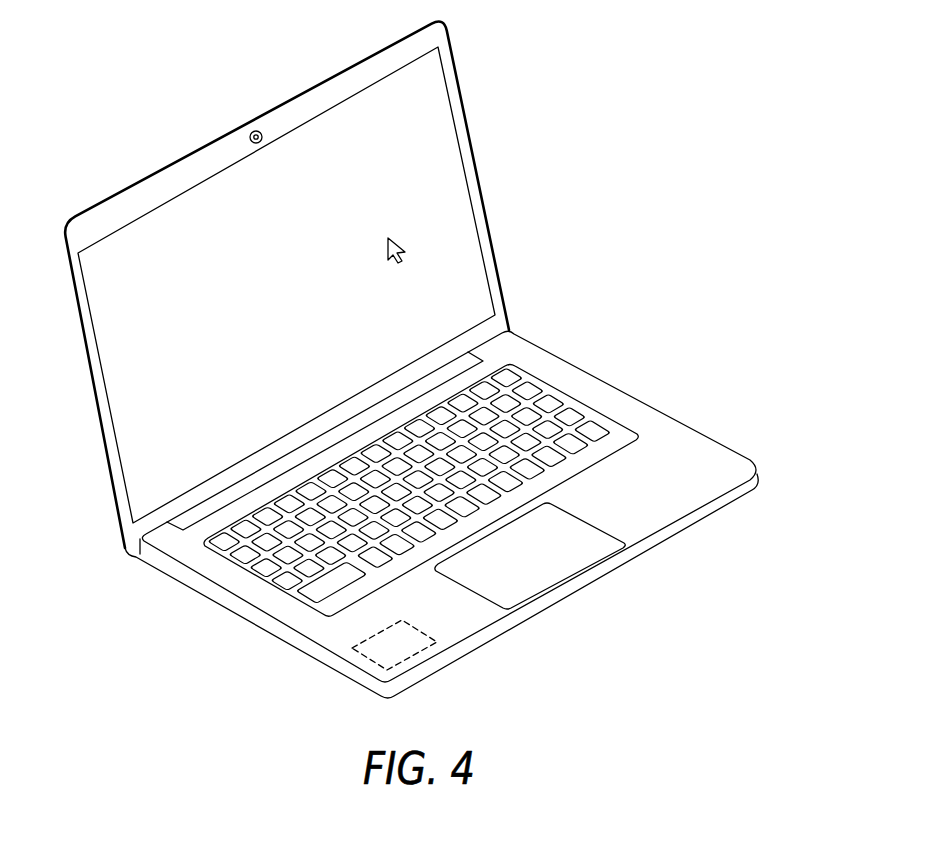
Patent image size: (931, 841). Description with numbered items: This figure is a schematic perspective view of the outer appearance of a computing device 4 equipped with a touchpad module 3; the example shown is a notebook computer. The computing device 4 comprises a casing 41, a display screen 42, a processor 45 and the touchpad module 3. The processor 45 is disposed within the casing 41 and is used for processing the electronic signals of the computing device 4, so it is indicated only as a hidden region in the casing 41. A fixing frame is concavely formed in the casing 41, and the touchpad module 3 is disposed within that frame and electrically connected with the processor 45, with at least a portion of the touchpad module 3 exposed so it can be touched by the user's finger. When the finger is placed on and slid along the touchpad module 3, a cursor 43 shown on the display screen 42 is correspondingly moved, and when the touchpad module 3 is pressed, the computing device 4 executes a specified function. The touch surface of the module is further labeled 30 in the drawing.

The computing device 4 is at (653, 145).
The casing 41 is at (693, 444).
The display screen 42 is at (440, 108).
The cursor 43 is at (401, 240).
The touch pad 30 is at (527, 578).
The touchpad module 3 is at (576, 543).
The processor 45 is at (384, 651).